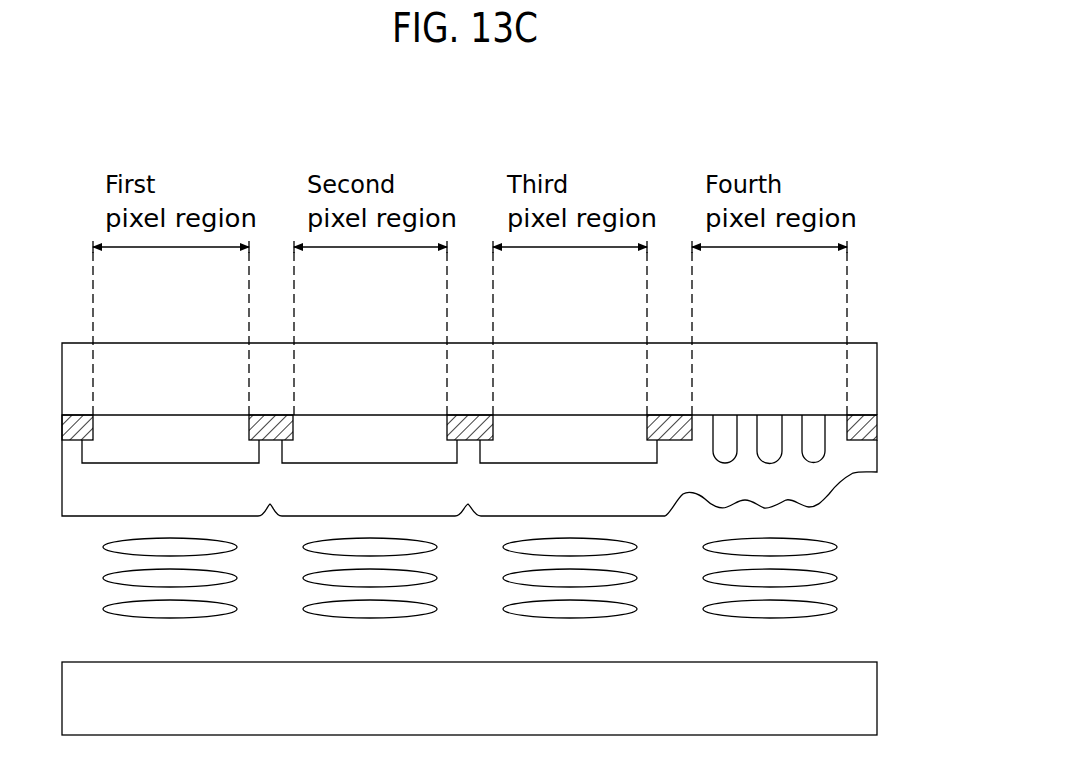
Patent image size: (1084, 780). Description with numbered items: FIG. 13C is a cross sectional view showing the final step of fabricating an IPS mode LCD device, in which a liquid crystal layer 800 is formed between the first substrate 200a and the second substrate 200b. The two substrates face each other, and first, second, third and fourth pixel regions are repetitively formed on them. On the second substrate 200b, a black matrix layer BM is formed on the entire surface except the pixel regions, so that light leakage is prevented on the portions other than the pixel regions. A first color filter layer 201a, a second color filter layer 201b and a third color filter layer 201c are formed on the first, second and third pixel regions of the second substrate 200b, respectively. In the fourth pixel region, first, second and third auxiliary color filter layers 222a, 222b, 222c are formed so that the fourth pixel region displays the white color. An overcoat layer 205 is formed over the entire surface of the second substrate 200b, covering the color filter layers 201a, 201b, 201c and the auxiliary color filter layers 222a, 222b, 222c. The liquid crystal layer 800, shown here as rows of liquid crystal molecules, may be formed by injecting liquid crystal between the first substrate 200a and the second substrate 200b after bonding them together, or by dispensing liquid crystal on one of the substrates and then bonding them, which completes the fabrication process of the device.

The second substrate 200b is at (870, 372).
The black matrix layer BM is at (870, 425).
The overcoat layer 205 is at (870, 455).
The first color filter layer 201a is at (190, 425).
The second color filter layer 201b is at (390, 425).
The third color filter layer 201c is at (590, 425).
The first auxiliary color filter layer 222a is at (717, 415).
The second auxiliary color filter layer 222b is at (770, 415).
The third auxiliary color filter layer 222c is at (822, 415).
The liquid crystal layer 800 is at (827, 578).
The first substrate 200a is at (870, 697).